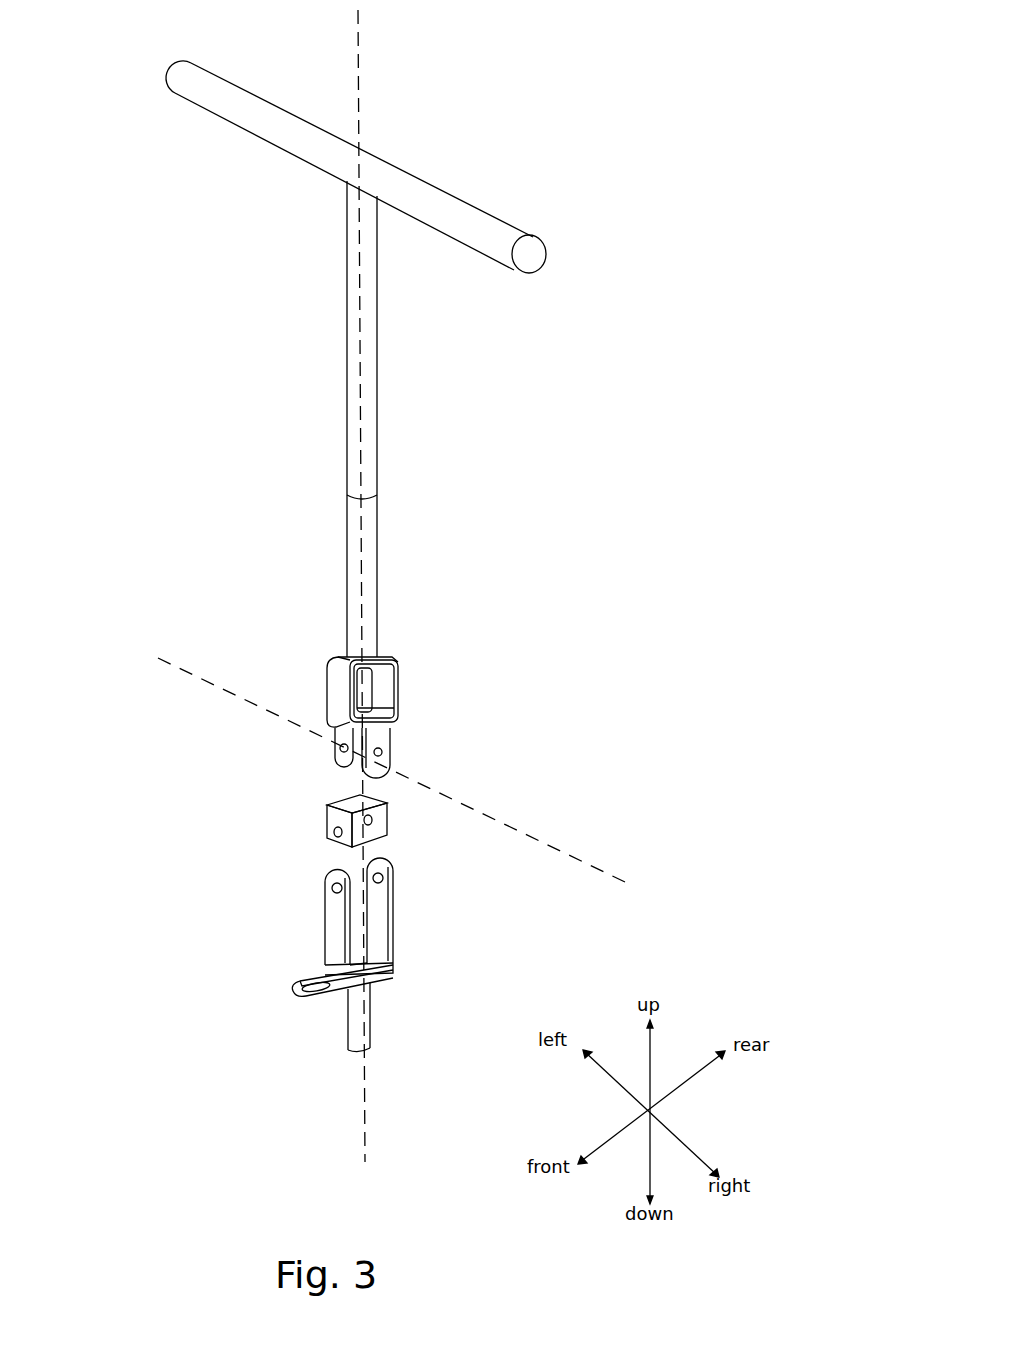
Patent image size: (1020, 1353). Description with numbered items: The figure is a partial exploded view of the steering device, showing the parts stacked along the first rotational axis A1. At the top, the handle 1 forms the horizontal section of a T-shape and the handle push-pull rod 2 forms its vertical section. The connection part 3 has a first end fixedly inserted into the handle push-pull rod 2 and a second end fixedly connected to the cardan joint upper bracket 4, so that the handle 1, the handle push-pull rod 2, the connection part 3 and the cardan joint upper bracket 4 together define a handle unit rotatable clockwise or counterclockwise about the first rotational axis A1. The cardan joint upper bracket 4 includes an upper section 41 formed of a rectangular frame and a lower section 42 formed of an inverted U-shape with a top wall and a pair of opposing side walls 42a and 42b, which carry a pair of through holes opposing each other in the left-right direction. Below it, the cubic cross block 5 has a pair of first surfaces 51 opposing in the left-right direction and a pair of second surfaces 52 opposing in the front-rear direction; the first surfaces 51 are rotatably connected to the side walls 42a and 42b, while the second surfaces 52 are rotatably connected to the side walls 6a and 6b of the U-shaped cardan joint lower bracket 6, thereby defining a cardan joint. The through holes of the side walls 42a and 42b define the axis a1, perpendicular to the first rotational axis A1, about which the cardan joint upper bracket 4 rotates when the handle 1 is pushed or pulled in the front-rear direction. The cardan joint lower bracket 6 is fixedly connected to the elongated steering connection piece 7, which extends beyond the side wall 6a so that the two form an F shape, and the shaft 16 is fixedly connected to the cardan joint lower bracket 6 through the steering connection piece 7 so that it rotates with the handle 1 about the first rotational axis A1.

The handle 1 is at (324, 167).
The handle push-pull rod 2 is at (239, 340).
The connection part 3 is at (239, 553).
The cardan joint upper bracket 4 is at (343, 627).
The upper section 41 is at (471, 619).
The lower section 42 is at (395, 715).
The side wall 42a is at (271, 725).
The side wall 42b is at (481, 753).
The cross block 5 is at (344, 788).
The first surfaces 51 is at (474, 847).
The second surfaces 52 is at (269, 817).
The cardan joint lower bracket 6 is at (343, 897).
The side wall 6a is at (274, 918).
The side wall 6b is at (476, 916).
The steering connection piece 7 is at (249, 985).
The shaft 16 is at (235, 1041).
The axis a1 is at (414, 784).
The first rotational axis A1 is at (365, 610).